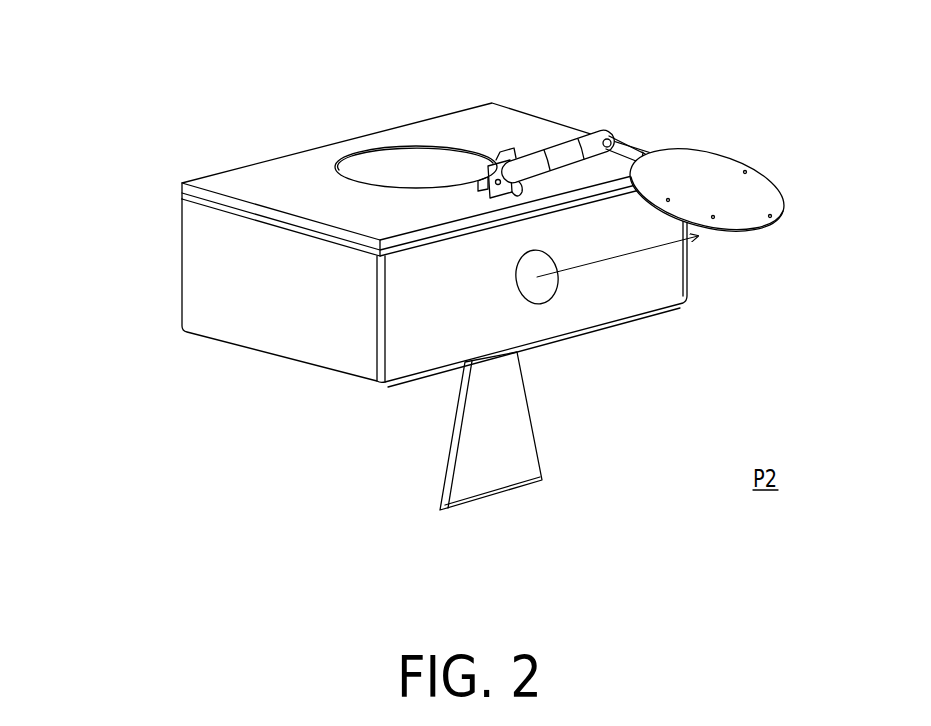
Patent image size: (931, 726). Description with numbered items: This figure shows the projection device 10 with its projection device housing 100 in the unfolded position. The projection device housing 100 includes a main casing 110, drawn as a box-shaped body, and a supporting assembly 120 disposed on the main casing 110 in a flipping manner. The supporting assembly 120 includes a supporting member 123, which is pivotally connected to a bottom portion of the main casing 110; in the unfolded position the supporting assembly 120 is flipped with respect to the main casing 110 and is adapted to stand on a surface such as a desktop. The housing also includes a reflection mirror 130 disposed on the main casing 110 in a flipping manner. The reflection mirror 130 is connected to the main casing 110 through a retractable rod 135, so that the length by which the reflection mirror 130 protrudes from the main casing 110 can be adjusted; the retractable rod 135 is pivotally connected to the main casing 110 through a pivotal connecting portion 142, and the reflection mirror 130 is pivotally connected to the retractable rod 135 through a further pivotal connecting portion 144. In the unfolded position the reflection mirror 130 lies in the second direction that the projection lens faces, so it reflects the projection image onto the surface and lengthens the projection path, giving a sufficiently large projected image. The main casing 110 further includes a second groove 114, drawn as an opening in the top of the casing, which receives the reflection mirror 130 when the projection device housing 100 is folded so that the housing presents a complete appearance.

The projection device 10 is at (687, 75).
The projection device housing 100 is at (170, 20).
The main casing 110 is at (197, 262).
The second groove 114 is at (408, 173).
The supporting assembly 120 is at (559, 431).
The supporting member 123 is at (516, 442).
The reflection mirror 130 is at (722, 177).
The retractable rod 135 is at (560, 158).
The pivotal connecting portion 142 is at (498, 163).
The joint 144 is at (607, 138).